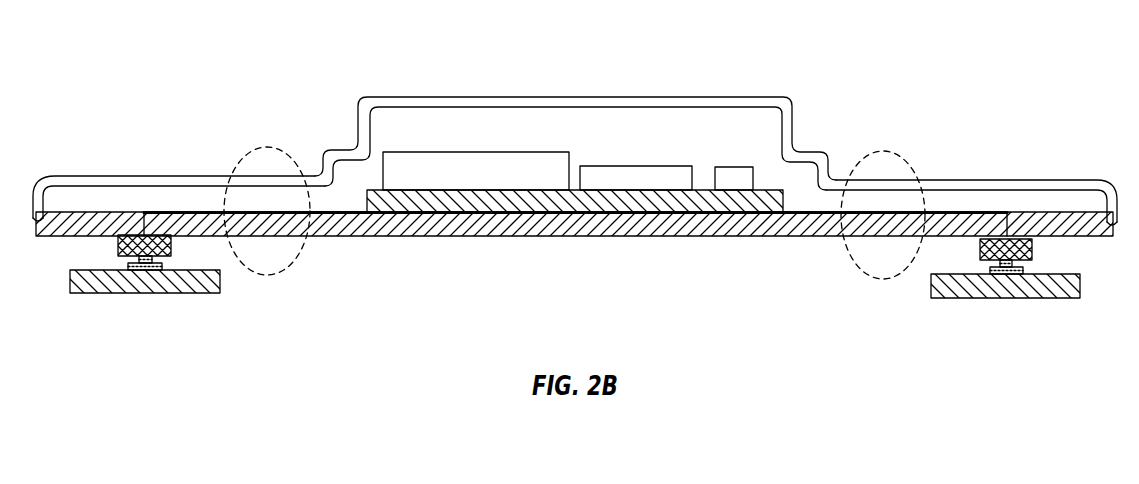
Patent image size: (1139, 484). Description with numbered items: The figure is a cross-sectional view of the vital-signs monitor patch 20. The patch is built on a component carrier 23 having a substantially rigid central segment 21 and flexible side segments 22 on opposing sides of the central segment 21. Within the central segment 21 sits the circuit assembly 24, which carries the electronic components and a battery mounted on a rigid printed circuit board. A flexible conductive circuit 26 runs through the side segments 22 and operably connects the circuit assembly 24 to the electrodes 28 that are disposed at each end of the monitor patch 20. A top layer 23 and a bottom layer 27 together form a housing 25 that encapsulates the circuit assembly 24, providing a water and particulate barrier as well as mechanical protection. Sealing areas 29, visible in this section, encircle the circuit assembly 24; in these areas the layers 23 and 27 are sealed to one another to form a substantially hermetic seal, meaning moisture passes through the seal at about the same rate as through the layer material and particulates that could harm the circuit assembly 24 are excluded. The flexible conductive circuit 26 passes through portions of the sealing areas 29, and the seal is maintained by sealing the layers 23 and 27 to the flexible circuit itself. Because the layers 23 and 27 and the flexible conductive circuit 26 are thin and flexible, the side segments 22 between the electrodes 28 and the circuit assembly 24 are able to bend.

The vital-signs monitor patch 20 is at (135, 48).
The central segment 21 is at (575, 122).
The side segments 22 is at (108, 160).
The top layer 23 is at (443, 98).
The circuit assembly 24 is at (410, 165).
The housing 25 is at (715, 237).
The flexible conductive circuit 26 is at (357, 210).
The bottom layer 27 is at (383, 237).
The electrodes 28 is at (185, 283).
The sealing areas 29 is at (267, 275).